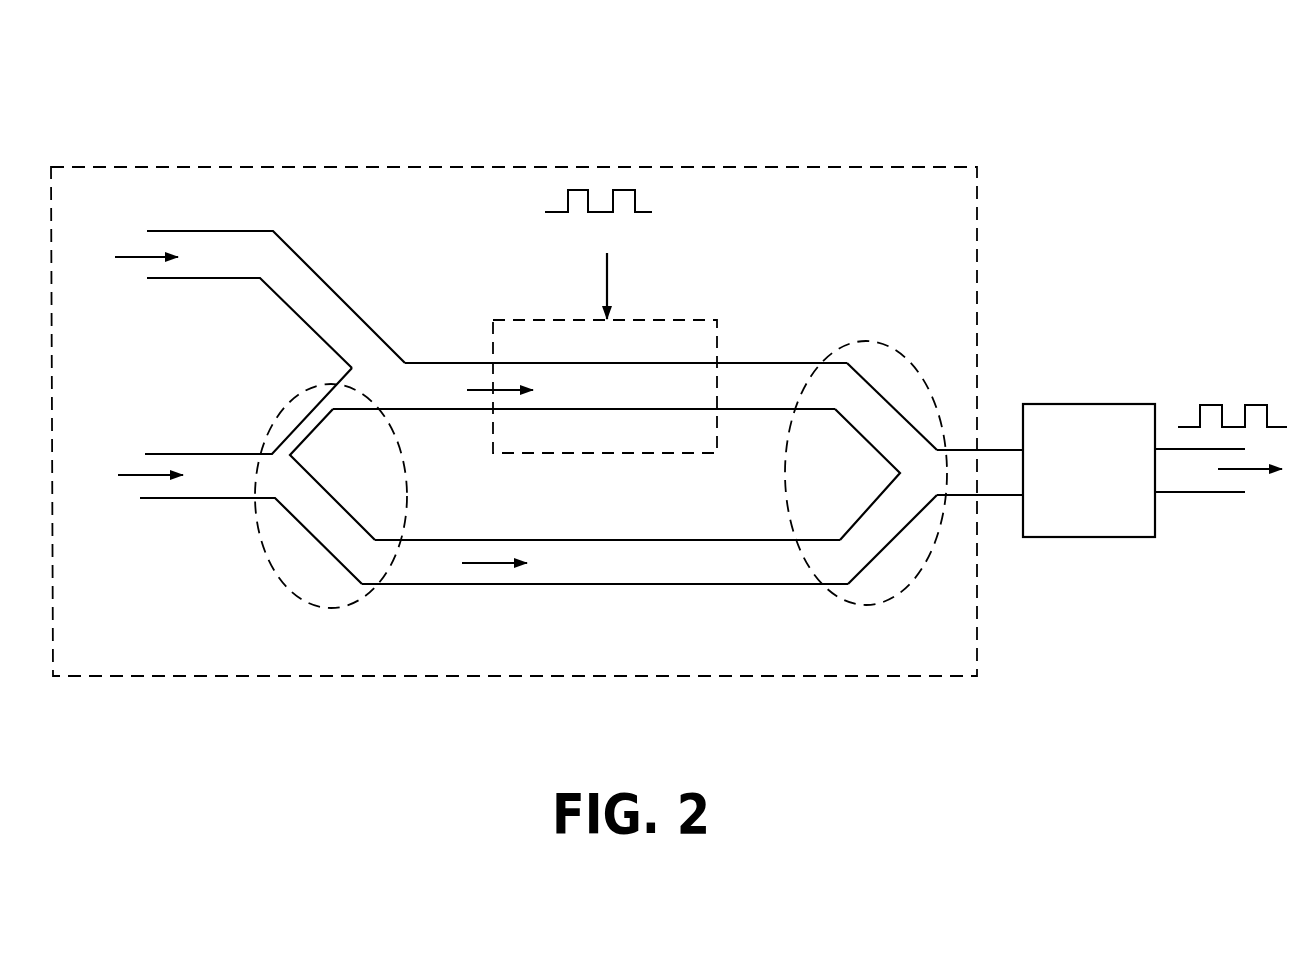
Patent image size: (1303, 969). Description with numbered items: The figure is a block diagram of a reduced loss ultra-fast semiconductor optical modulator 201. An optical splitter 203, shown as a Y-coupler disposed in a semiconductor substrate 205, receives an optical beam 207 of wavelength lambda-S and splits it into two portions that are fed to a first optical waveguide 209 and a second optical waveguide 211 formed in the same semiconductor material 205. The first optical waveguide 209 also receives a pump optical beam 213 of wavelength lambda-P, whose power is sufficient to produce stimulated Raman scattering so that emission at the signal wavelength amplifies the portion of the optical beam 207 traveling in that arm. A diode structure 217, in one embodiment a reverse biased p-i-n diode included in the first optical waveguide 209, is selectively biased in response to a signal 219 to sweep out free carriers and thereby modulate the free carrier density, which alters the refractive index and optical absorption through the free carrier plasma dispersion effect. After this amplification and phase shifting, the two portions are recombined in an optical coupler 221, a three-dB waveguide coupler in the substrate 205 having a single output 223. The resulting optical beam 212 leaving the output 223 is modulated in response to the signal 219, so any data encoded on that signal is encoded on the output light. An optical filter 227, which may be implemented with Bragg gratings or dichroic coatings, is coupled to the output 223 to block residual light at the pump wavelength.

The optical modulator 201 is at (1138, 65).
The optical splitter 203 is at (285, 585).
The semiconductor substrate 205 is at (977, 215).
The optical beam 207 is at (135, 490).
The first optical waveguide 209 is at (407, 410).
The second optical waveguide 211 is at (417, 585).
The optical beam output 212 is at (1228, 497).
The pump optical beam 213 is at (122, 272).
The diode structure 217 is at (717, 333).
The signal 219 is at (653, 232).
The optical coupler 221 is at (832, 592).
The single output 223 is at (993, 523).
The optical filter 227 is at (1133, 402).